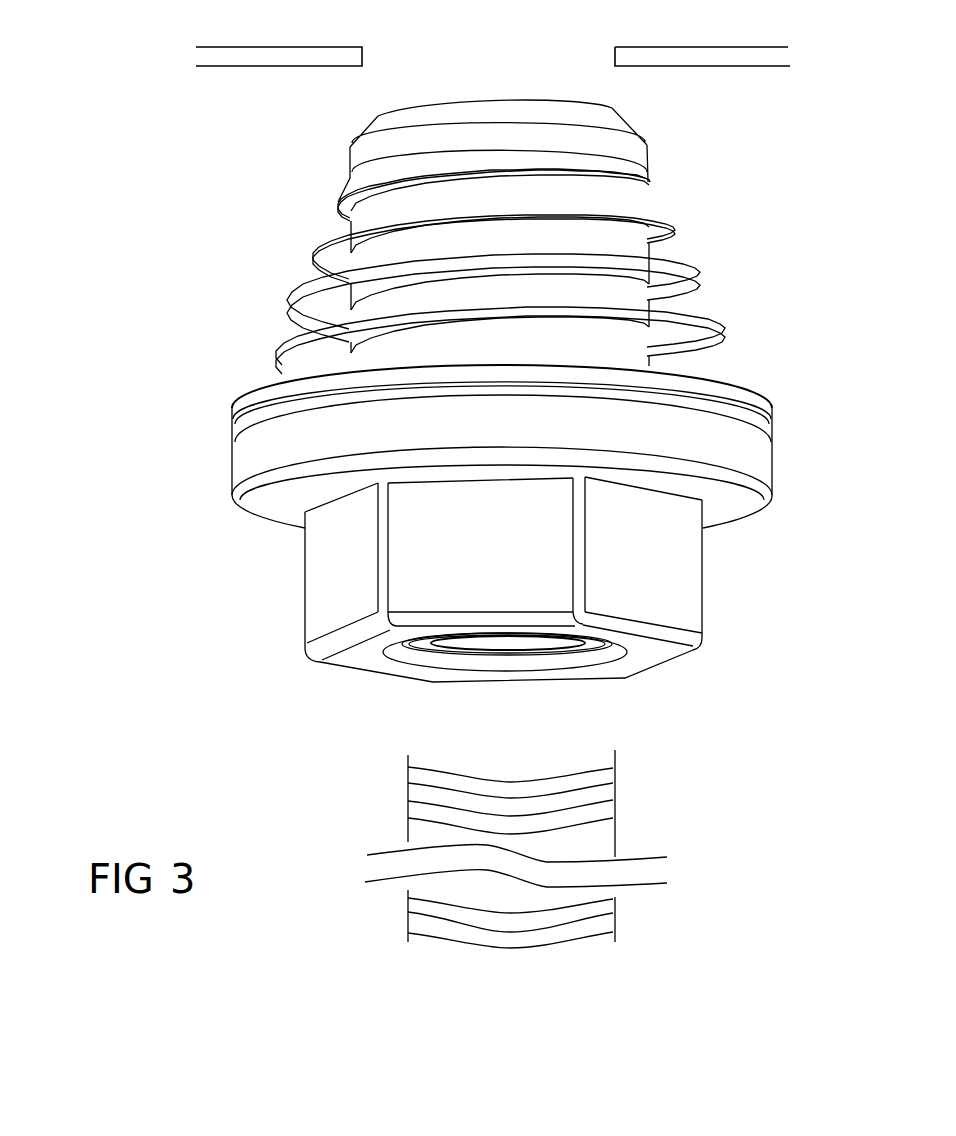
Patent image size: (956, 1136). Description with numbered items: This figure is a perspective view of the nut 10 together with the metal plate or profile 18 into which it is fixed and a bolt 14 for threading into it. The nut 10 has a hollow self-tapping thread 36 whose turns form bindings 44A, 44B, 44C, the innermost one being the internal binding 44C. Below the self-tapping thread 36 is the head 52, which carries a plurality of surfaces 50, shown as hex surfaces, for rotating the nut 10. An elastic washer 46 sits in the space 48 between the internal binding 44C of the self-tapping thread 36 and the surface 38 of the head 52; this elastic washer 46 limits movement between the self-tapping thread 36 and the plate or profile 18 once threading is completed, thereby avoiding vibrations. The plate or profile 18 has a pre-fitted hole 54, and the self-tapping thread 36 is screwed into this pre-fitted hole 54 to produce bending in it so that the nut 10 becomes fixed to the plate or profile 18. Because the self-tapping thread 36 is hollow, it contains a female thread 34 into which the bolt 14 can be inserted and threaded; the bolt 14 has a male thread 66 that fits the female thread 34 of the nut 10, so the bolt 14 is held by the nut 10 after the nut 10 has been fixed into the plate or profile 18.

The nut 10 is at (726, 687).
The bolt 14 is at (689, 911).
The plate or profile 18 is at (238, 75).
The female thread 34 is at (537, 647).
The self-tapping thread 36 is at (127, 195).
The surface of head 38 is at (222, 427).
The binding of self-tapping thread 44A is at (653, 177).
The binding of self-tapping thread 44B is at (313, 288).
The internal binding of self-tapping thread 44C is at (283, 350).
The elastic washer 46 is at (233, 410).
The space 48 is at (300, 372).
The surfaces 50 is at (345, 577).
The head 52 is at (208, 573).
The pre-fitted hole 54 is at (455, 42).
The male thread 66 is at (595, 783).